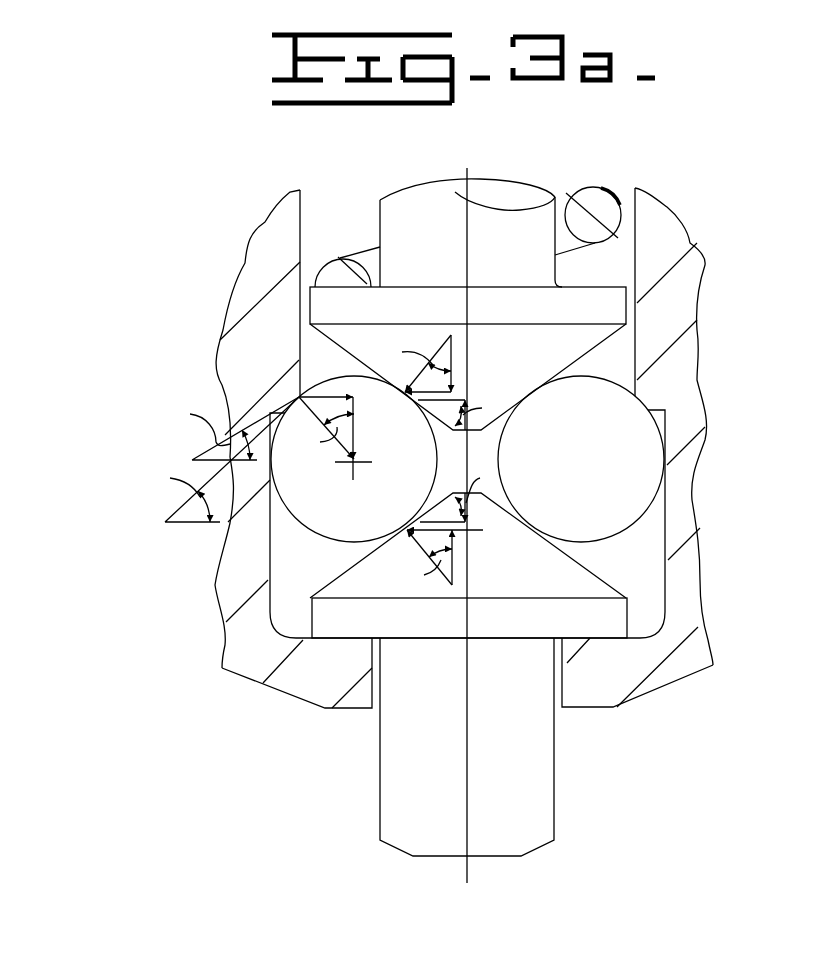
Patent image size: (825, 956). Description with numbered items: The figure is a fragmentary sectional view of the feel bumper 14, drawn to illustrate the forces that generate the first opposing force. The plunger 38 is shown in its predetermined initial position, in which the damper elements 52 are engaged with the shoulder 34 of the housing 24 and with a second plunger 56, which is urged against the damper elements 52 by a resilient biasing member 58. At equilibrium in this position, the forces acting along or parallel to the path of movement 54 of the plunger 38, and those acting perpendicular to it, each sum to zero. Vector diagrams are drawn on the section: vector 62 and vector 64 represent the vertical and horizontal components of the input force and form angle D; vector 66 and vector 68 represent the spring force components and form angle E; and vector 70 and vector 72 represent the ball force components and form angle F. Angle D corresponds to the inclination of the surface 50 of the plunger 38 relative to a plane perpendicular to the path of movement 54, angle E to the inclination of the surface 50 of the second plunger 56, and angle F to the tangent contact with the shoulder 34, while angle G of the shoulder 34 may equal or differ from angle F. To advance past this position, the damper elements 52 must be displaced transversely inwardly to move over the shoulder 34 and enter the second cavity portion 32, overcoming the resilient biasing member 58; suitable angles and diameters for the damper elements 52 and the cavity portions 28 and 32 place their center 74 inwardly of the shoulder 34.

The feel bumper 14 is at (243, 748).
The housing 24 is at (295, 699).
The cavity portion 28 is at (643, 625).
The second cavity portion 32 is at (613, 260).
The shoulder 34 is at (645, 405).
The plunger 38 is at (557, 843).
The surface 50 is at (602, 343).
The damper elements 52 is at (320, 548).
The path of movement 54 is at (472, 178).
The second plunger 56 is at (536, 175).
The resilient biasing member 58 is at (605, 192).
The vector 62 is at (457, 583).
The vector 64 is at (462, 528).
The vector 66 is at (452, 355).
The vector 68 is at (430, 392).
The vector 70 is at (355, 403).
The vector 72 is at (299, 397).
The center 74 is at (372, 463).